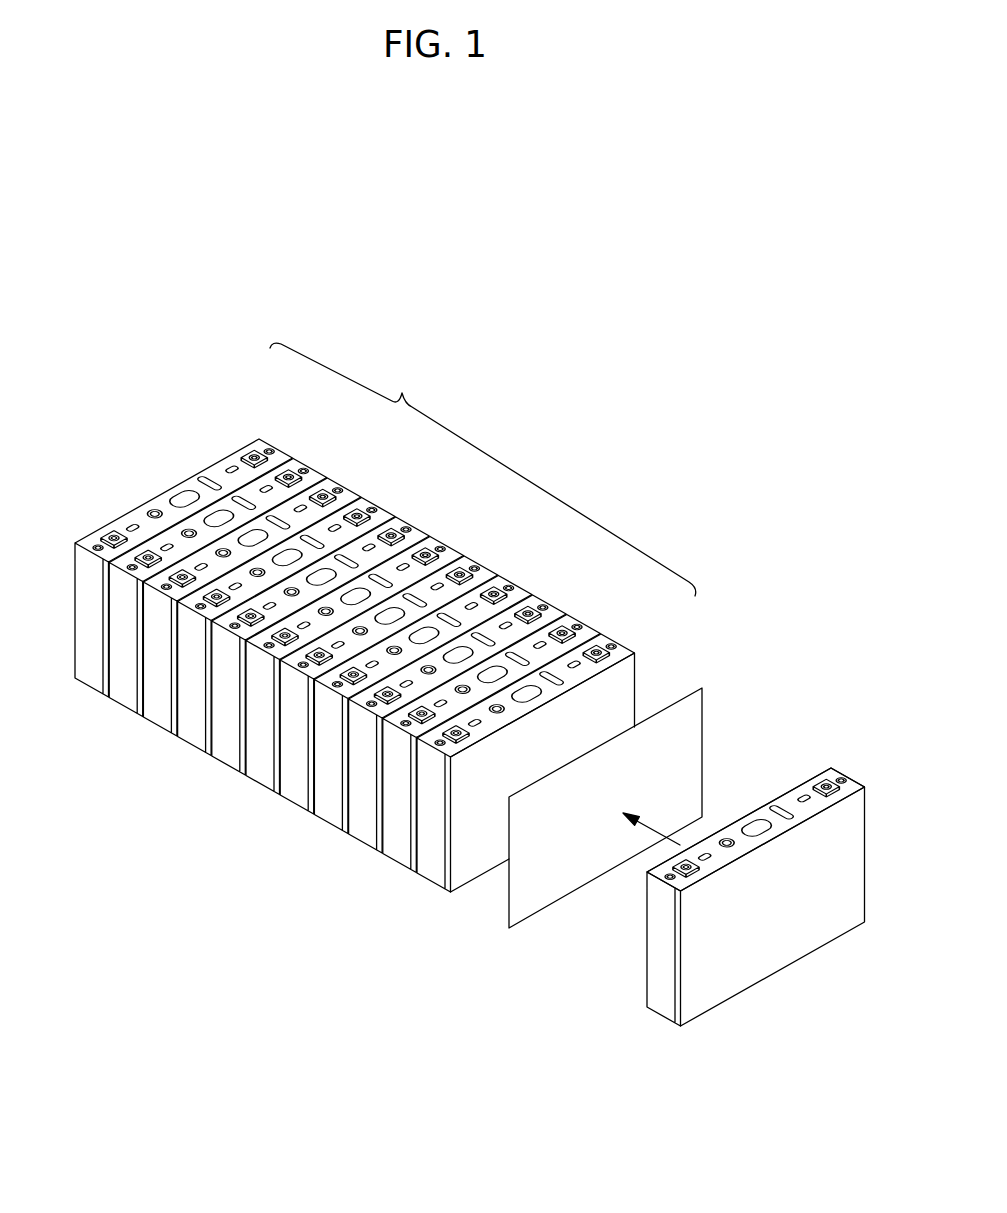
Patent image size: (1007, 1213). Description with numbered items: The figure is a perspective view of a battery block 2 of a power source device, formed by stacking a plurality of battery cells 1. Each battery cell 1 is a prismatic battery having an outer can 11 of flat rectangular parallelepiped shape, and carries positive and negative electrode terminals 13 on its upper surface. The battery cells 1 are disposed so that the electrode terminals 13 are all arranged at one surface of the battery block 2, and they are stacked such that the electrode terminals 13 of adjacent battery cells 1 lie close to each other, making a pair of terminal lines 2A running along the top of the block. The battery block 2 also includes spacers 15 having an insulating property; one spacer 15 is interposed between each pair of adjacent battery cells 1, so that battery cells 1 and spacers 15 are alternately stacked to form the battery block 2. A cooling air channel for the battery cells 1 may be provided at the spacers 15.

The battery cell 1 is at (94, 668).
The battery block 2 is at (464, 750).
The terminal lines 2A is at (483, 469).
The outer can 11 is at (799, 780).
The electrode terminal 13 is at (113, 537).
The spacer 15 is at (537, 888).